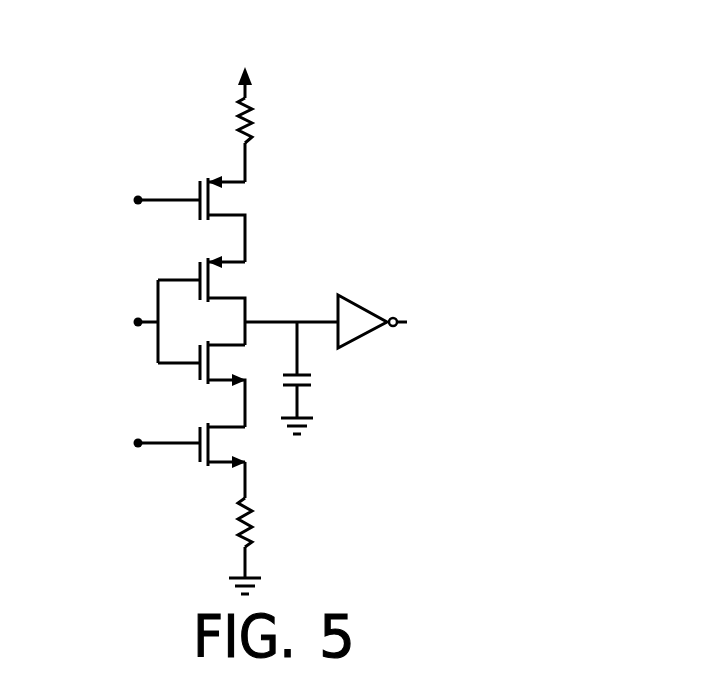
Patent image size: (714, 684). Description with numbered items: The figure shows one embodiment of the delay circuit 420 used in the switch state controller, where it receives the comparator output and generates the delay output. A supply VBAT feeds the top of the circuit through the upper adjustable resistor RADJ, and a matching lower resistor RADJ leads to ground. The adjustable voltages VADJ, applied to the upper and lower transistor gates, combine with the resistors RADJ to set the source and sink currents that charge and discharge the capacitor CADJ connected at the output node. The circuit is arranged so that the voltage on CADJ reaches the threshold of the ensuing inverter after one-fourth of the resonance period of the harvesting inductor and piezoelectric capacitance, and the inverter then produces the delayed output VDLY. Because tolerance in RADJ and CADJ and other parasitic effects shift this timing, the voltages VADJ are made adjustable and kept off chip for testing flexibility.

The delay circuit 420 is at (153, 143).
The battery voltage supply VBAT is at (254, 69).
The adjustable resistor RADJ is at (271, 346).
The adjustable voltage input VADJ is at (145, 319).
The timing capacitor CADJ is at (320, 378).
The delayed output voltage VDLY is at (346, 321).